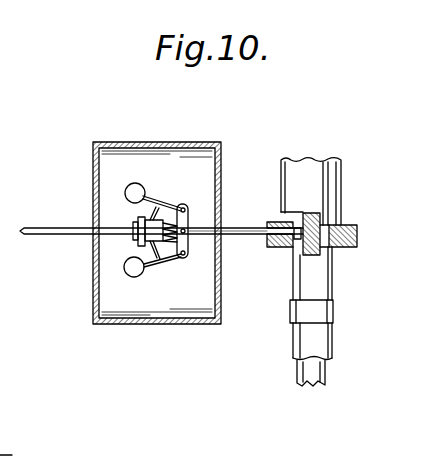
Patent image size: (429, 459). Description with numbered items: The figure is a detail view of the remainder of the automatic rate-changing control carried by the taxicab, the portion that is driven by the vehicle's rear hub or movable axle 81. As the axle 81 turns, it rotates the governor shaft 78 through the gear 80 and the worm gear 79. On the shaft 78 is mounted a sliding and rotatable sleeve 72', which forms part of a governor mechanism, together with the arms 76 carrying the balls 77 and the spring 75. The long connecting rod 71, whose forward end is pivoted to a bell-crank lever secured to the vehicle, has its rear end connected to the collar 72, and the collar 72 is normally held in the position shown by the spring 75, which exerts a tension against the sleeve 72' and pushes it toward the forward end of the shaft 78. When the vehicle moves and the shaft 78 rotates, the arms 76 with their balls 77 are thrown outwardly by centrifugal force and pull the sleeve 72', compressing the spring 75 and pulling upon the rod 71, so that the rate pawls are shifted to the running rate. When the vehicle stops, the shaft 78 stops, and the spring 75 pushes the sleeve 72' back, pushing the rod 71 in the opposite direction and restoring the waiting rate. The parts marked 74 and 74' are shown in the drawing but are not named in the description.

The connecting rod 71 is at (47, 234).
The collar 72 is at (104, 251).
The sliding and rotatable sleeve 72' is at (104, 281).
The upper ball weight 74 is at (102, 200).
The bracket 74' is at (205, 224).
The spring 75 is at (173, 204).
The arms 76 is at (190, 249).
The balls 77 is at (134, 272).
The shaft 78 is at (227, 227).
The worm gear 79 is at (295, 249).
The gear 80 is at (357, 237).
The rear hub or movable axle 81 is at (322, 270).